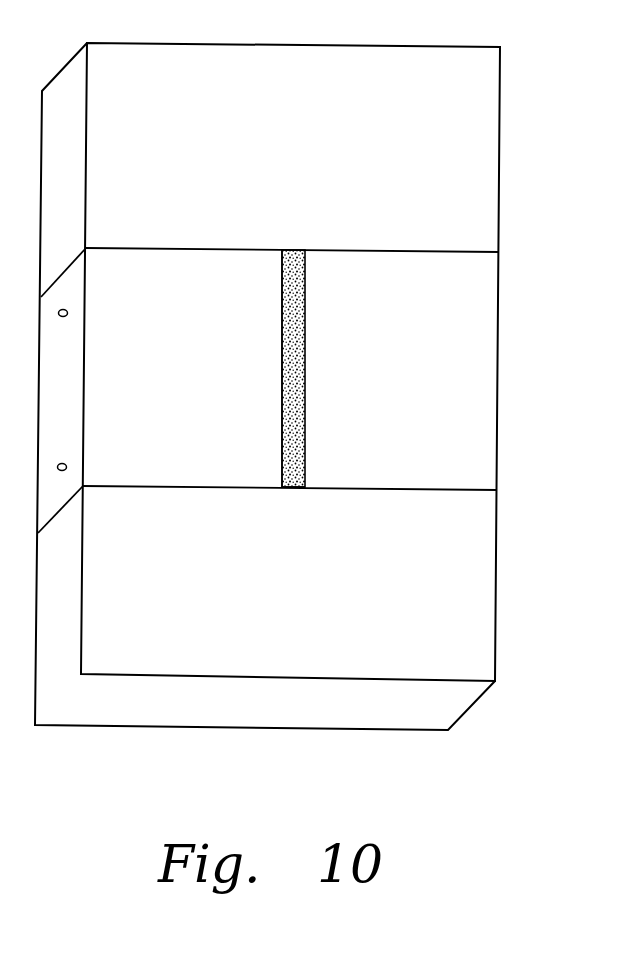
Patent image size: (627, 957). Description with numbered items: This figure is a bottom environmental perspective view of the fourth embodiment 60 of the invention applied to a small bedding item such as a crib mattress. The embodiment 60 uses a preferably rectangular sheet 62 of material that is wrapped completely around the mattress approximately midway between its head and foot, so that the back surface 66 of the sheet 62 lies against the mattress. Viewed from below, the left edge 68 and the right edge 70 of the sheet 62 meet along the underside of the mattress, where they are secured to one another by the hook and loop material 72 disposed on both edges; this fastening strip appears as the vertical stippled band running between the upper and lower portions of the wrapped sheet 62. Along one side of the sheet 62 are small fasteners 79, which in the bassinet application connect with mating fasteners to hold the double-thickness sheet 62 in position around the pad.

The fourth embodiment 60 is at (552, 338).
The sheet 62 is at (417, 435).
The back surface 66 is at (432, 268).
The left edge 68 is at (305, 287).
The right edge 70 is at (290, 488).
The hook and loop material 72 is at (281, 379).
The fasteners 79 is at (67, 314).